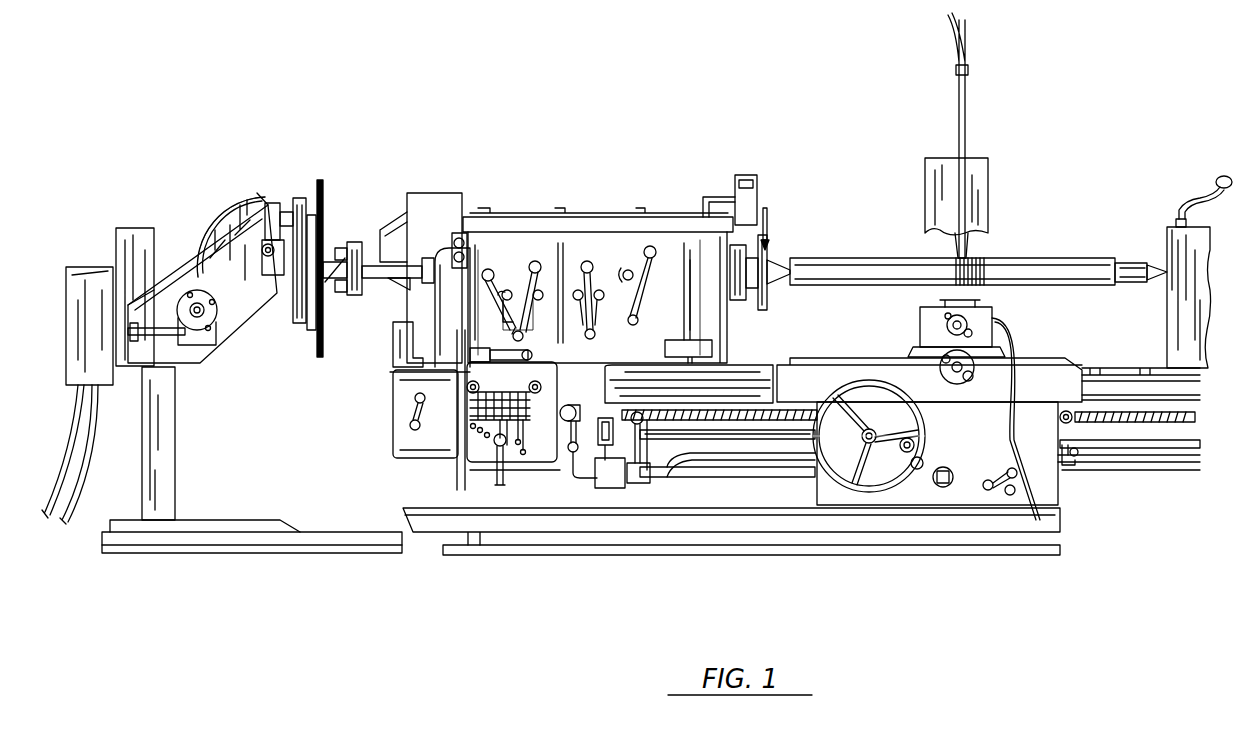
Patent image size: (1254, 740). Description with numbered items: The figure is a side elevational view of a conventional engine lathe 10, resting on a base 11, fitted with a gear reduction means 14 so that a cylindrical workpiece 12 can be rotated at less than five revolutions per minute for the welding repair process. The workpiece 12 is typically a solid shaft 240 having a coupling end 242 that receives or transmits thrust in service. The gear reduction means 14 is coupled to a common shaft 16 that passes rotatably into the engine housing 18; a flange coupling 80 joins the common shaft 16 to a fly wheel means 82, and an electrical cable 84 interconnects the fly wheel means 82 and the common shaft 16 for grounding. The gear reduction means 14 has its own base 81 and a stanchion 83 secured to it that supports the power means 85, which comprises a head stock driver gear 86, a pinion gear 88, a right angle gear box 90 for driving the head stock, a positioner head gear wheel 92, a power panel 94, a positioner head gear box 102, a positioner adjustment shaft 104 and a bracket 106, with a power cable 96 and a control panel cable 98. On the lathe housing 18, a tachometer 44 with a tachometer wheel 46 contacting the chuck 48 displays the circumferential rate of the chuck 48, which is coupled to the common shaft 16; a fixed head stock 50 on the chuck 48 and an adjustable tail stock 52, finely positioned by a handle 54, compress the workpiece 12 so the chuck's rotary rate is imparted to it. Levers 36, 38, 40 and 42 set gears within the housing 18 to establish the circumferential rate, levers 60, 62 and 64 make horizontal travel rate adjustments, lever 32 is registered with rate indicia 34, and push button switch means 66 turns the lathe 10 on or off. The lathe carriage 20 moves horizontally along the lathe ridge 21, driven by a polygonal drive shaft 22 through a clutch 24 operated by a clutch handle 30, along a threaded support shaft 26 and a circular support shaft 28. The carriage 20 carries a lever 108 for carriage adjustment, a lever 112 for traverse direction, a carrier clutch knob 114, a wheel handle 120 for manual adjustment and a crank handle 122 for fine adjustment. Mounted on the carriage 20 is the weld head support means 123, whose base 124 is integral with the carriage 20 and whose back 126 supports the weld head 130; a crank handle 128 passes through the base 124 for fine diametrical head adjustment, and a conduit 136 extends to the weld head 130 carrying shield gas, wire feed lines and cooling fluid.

The engine lathe 10 is at (596, 212).
The base 11 is at (842, 542).
The cylindrical workpiece 12 is at (1039, 248).
The gear reduction means 14 is at (242, 184).
The common shaft 16 is at (378, 295).
The engine housing 18 is at (670, 250).
The lathe carriage 20 is at (972, 495).
The lathe ridge 21 is at (768, 378).
The polygonal drive shaft 22 is at (748, 470).
The clutch 24 is at (637, 490).
The threaded support shaft 26 is at (720, 413).
The circular support shaft 28 is at (707, 440).
The clutch handle 30 is at (646, 447).
The lever 32 is at (490, 484).
The rate indicia 34 is at (494, 430).
The lever 36 is at (492, 270).
The lever 38 is at (540, 265).
The lever 40 is at (593, 265).
The lever 42 is at (642, 292).
The tachometer 44 is at (752, 203).
The tachometer wheel 46 is at (768, 222).
The chuck 48 is at (768, 249).
The fixed head stock 50 is at (777, 283).
The adjustable tail stock 52 is at (1152, 248).
The handle 54 is at (1206, 198).
The lever 60 is at (392, 422).
The lever 62 is at (560, 476).
The lever 64 is at (490, 350).
The push button switch means 66 is at (452, 248).
The flange coupling 80 is at (346, 240).
The base 81 is at (202, 545).
The fly wheel means 82 is at (322, 180).
The stanchion 83 is at (165, 503).
The electrical cable 84 is at (343, 308).
The power means 85 is at (171, 276).
The head stock driver gear 86 is at (300, 198).
The pinion gear 88 is at (297, 322).
The right angle gear box 90 is at (275, 203).
The positioner head gear wheel 92 is at (248, 224).
The power panel 94 is at (100, 303).
The power cable 96 is at (70, 448).
The control panel cable 98 is at (77, 502).
The positioner head gear box 102 is at (197, 346).
The positioner adjustment shaft 104 is at (150, 338).
The bracket 106 is at (243, 312).
The lever 108 is at (1080, 453).
The lever 112 is at (984, 470).
The carrier clutch knob 114 is at (940, 488).
The wheel handle 120 is at (857, 492).
The crank handle 122 is at (958, 385).
The weld head support means 123 is at (922, 178).
The base 124 is at (1002, 348).
The back 126 is at (975, 178).
The crank handle 128 is at (977, 312).
The weld head 130 is at (968, 243).
The conduit 136 is at (968, 78).
The shaft 240 is at (853, 267).
The coupling end 242 is at (1130, 260).